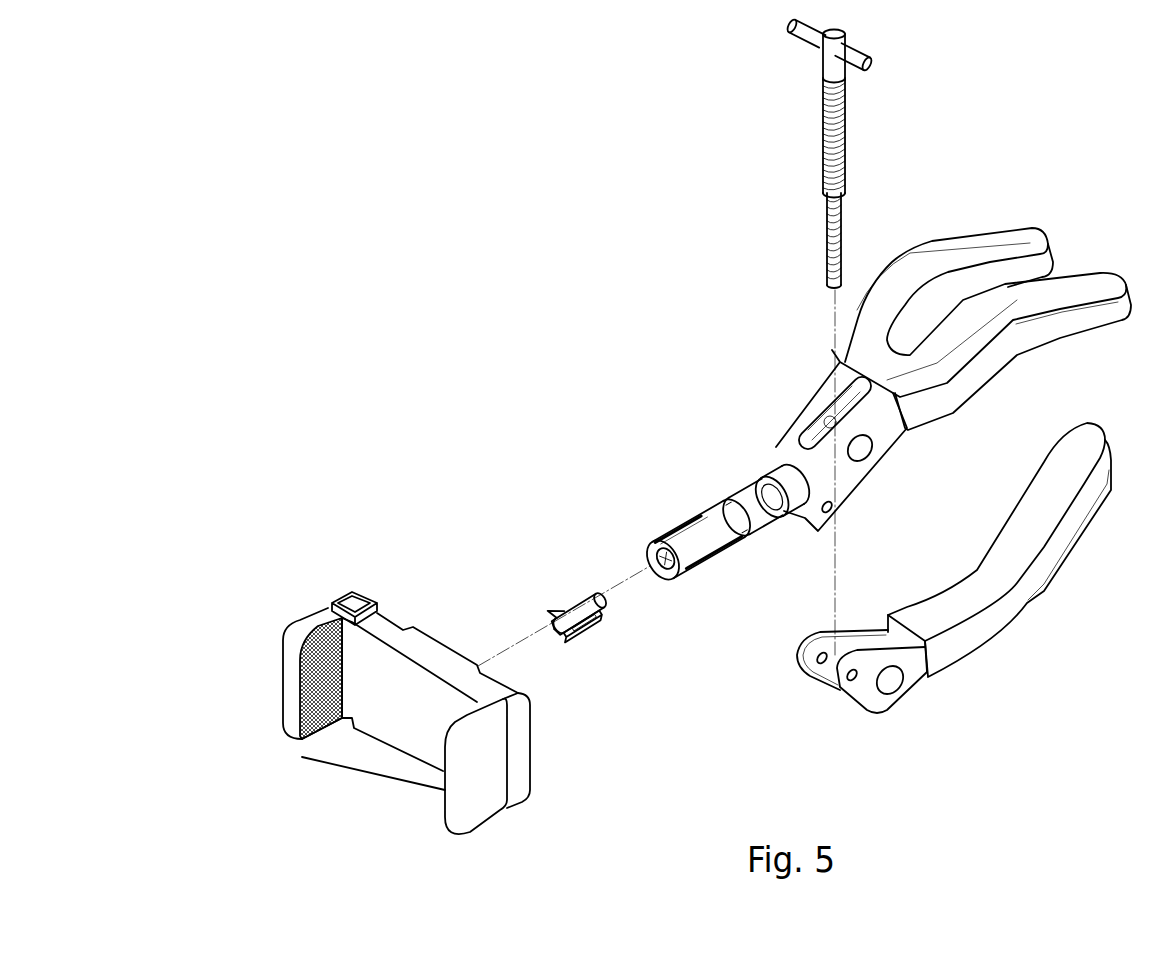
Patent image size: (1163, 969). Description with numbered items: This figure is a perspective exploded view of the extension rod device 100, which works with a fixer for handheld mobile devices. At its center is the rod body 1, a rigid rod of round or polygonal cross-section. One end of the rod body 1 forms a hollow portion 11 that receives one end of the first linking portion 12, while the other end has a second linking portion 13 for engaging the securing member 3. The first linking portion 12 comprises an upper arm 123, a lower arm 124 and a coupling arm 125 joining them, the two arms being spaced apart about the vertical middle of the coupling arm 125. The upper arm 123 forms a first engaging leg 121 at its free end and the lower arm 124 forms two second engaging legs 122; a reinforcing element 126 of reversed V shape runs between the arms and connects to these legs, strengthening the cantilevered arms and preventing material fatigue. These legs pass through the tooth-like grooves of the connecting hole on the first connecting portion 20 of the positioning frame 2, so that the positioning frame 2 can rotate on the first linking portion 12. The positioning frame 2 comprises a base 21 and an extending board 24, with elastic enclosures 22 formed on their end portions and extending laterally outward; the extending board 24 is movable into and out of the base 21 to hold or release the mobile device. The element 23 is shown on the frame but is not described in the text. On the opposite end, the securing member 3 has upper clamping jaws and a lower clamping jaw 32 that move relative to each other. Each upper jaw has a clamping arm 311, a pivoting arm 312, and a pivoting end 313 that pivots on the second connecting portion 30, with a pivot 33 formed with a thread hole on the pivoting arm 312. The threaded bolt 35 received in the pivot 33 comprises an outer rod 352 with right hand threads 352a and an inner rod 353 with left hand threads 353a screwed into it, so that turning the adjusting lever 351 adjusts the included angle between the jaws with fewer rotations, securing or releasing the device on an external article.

The extension rod device 100 is at (311, 190).
The rod body 1 is at (690, 530).
The hollow portion 11 is at (660, 578).
The second linking portion 13 is at (758, 487).
The second connecting portion 30 is at (757, 487).
The securing member 3 is at (650, 114).
The clamping arm 311 is at (990, 243).
The pivoting arm 312 is at (815, 398).
The pivoting end 313 is at (800, 515).
The pivot 33 is at (837, 490).
The lower clamping jaw 32 is at (975, 633).
The threaded bolt 35 is at (731, 60).
The adjusting lever 351 is at (815, 33).
The outer rod 352 is at (827, 128).
The right hand threads 352a is at (845, 153).
The inner rod 353 is at (828, 247).
The left hand threads 353a is at (845, 213).
The first linking portion 12 is at (482, 521).
The first engaging leg 121 is at (565, 602).
The second engaging legs 122 is at (556, 624).
The upper arm 123 is at (585, 598).
The lower arm 124 is at (585, 622).
The coupling arm 125 is at (602, 593).
The reinforcing element 126 is at (592, 610).
The positioning frame 2 is at (280, 555).
The first connecting portion 20 is at (430, 638).
The base 21 is at (390, 633).
The elastic enclosures 22 is at (313, 735).
The anti-slip pad 23 is at (367, 668).
The extending board 24 is at (532, 696).